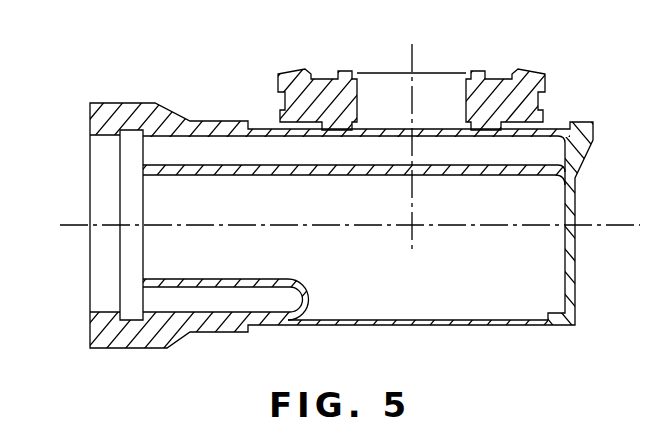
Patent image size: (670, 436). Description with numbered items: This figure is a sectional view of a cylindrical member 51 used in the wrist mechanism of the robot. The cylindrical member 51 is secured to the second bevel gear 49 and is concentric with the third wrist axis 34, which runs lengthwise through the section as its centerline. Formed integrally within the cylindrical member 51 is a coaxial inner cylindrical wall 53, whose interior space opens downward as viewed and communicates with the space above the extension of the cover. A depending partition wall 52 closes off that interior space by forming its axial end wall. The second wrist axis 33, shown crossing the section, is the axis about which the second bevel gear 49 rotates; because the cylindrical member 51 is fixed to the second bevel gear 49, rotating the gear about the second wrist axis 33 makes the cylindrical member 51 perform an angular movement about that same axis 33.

The second wrist axis 33 is at (411, 52).
The third wrist axis 34 is at (123, 224).
The second bevel gear 49 is at (493, 84).
The cylindrical member 51 is at (150, 102).
The depending partition wall 52 is at (578, 281).
The inner cylindrical wall 53 is at (266, 278).